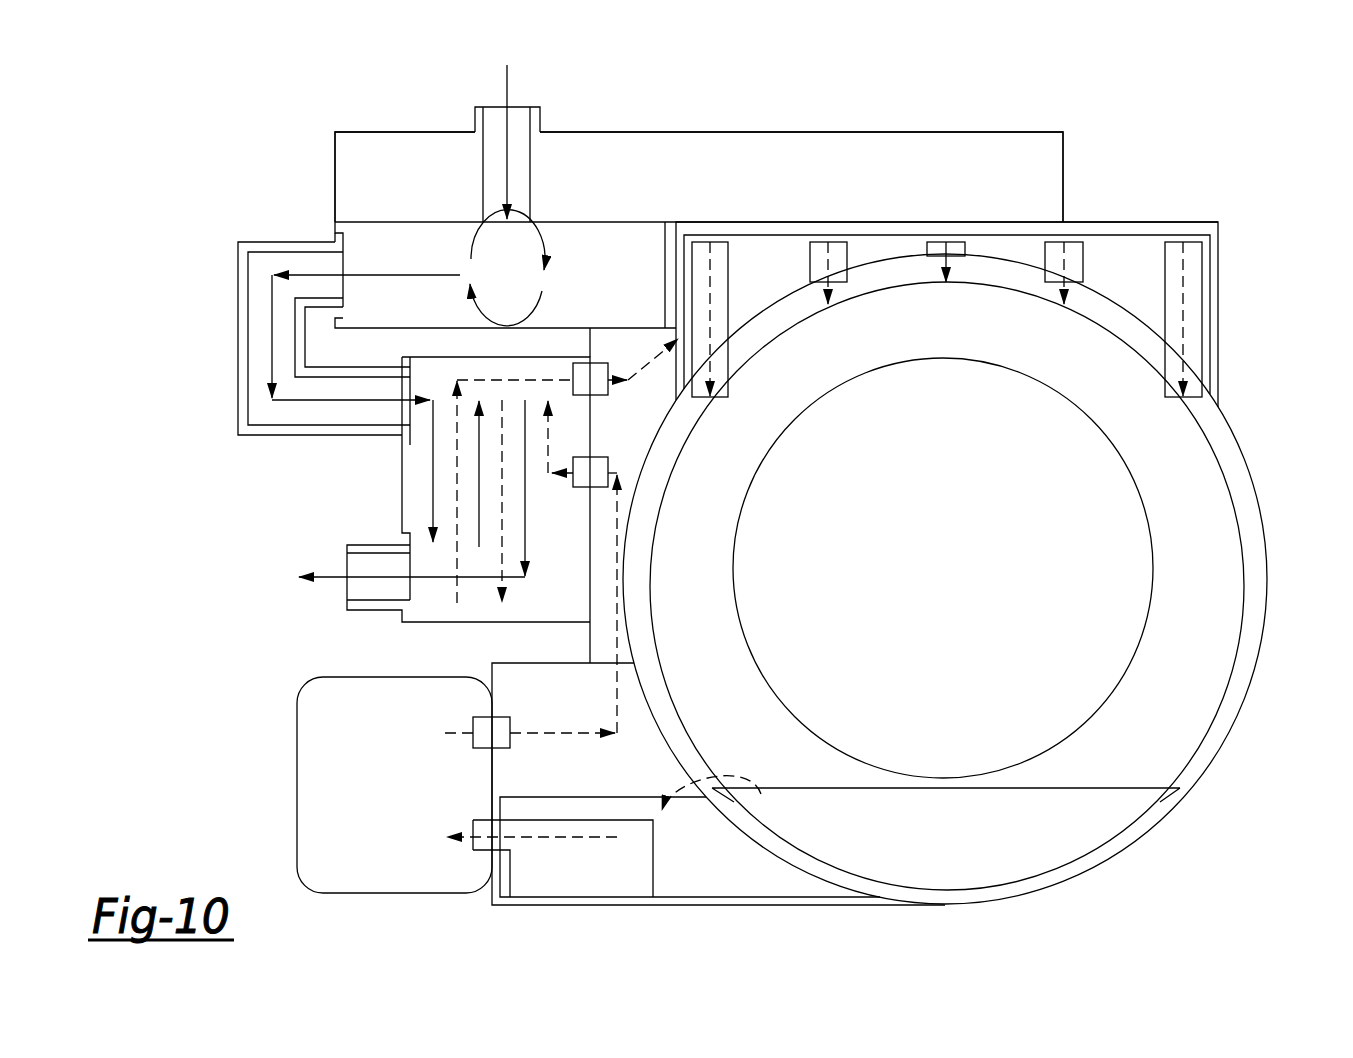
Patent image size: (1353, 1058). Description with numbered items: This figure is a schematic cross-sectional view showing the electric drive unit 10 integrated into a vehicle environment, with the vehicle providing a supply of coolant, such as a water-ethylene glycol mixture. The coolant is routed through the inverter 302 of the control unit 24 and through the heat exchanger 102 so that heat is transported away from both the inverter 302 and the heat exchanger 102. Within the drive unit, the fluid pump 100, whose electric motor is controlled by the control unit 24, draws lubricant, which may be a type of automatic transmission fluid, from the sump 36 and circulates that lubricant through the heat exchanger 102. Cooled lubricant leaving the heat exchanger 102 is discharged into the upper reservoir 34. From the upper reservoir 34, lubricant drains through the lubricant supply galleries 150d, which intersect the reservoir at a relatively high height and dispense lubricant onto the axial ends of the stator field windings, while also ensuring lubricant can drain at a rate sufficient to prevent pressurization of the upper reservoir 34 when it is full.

The electric drive unit 10 is at (1274, 355).
The control unit 24 is at (867, 104).
The upper reservoir 34 is at (1143, 260).
The sump 36 is at (697, 853).
The fluid pump 100 is at (297, 772).
The heat exchanger 102 is at (462, 623).
The lubricant supply galleries 150d is at (730, 270).
The inverter 302 is at (606, 155).